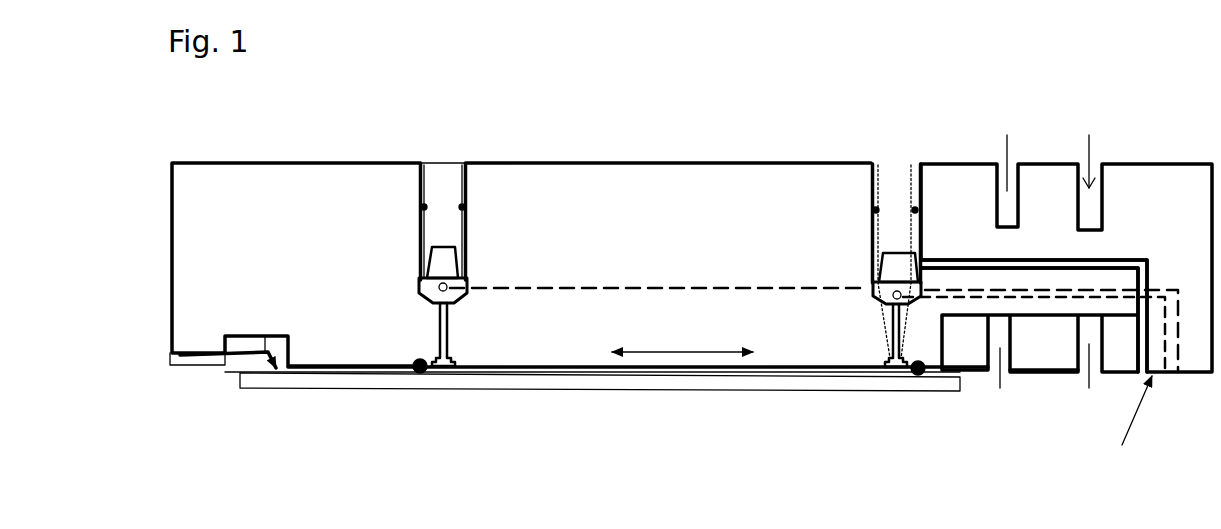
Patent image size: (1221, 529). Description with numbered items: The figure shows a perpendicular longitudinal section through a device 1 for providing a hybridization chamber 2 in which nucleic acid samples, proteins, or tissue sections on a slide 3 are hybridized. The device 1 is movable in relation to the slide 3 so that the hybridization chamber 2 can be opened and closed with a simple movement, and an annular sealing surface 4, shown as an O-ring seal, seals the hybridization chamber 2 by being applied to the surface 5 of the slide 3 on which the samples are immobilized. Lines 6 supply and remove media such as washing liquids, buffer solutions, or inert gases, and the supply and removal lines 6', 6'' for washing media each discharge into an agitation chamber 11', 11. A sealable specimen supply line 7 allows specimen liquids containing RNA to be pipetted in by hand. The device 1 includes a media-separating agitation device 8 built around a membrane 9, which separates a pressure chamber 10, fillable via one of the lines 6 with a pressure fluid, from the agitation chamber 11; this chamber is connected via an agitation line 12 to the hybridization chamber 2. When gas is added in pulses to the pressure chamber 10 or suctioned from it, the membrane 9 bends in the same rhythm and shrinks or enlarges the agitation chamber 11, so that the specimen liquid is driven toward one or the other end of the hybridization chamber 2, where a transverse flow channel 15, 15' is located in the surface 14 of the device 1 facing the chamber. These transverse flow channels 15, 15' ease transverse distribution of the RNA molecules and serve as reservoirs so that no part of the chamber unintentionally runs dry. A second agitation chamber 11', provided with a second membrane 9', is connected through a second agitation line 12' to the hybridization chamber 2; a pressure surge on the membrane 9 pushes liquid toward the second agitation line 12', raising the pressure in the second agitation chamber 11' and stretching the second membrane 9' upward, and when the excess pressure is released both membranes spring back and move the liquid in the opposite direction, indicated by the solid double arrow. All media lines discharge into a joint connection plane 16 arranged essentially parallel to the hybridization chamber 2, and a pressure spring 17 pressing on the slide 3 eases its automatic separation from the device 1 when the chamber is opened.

The device 1 is at (237, 249).
The hybridization chamber 2 is at (578, 370).
The slide 3 is at (685, 382).
The annular sealing surface 4 is at (417, 373).
The surface of the slide 5 is at (333, 366).
The lines 6 is at (1055, 287).
The supply and/or removal line 6' is at (814, 286).
The supply and/or removal line 6'' is at (1034, 334).
The specimen supply line 7 is at (883, 188).
The agitation device 8 is at (827, 239).
The membrane 9 is at (914, 242).
The second membrane 9' is at (467, 239).
The pressure chamber 10 is at (870, 262).
The agitation chamber 11 is at (850, 307).
The second agitation chamber 11' is at (495, 305).
The agitation line 12 is at (843, 388).
The second agitation line 12' is at (501, 387).
The surface of the device 14 is at (646, 372).
The transverse flow channel 15 is at (883, 419).
The transverse flow channel 15' is at (463, 419).
The joint connection plane 16 is at (1076, 303).
The pressure spring 17 is at (233, 358).